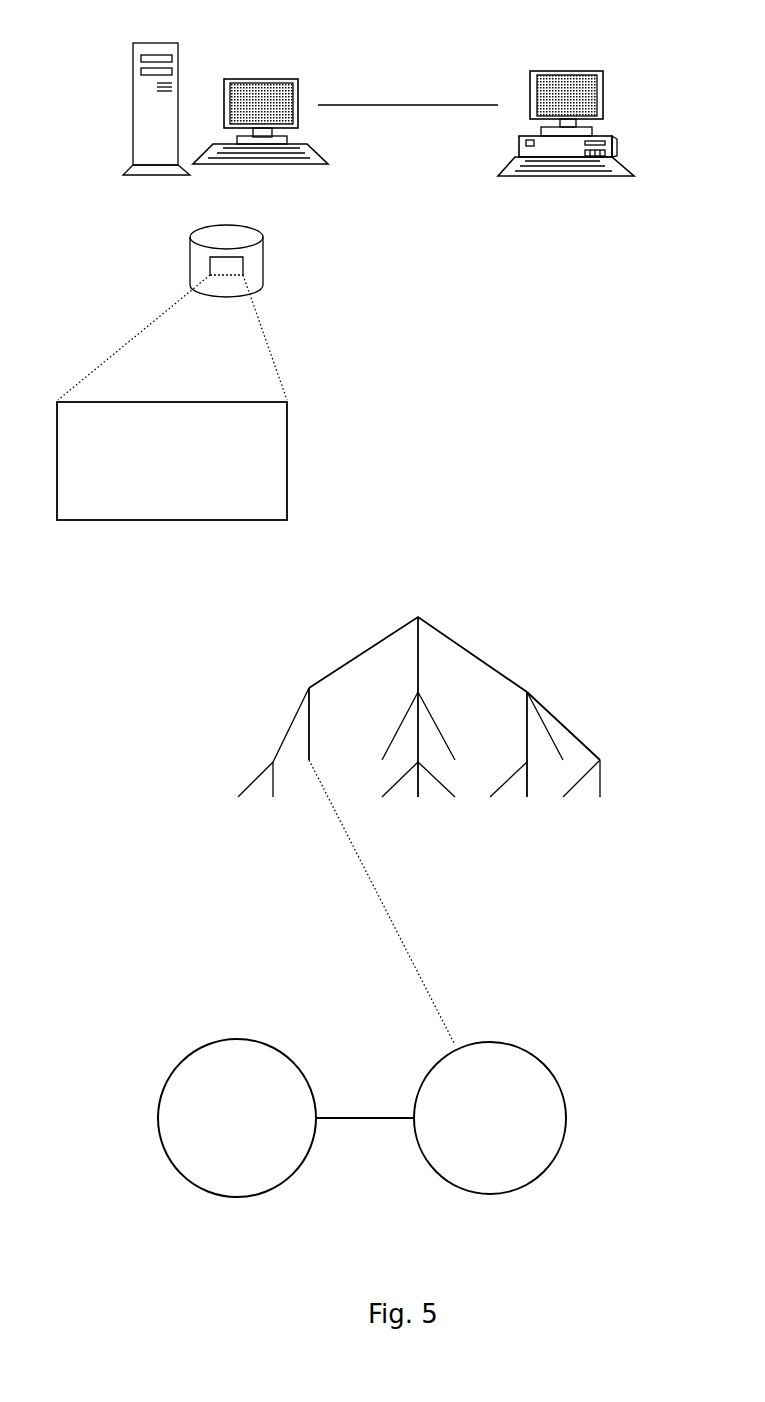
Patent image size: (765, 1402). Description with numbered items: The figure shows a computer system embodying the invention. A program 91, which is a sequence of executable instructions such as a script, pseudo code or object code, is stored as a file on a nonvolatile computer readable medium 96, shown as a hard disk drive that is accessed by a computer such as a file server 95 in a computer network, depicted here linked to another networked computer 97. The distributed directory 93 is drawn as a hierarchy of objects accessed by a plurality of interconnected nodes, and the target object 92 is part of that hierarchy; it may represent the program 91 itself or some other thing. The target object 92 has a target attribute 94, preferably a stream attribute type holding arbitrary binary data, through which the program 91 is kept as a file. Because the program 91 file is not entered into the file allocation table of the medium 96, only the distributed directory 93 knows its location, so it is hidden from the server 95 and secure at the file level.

The program 91 is at (287, 443).
The target object 92 is at (535, 1052).
The distributed directory 93 is at (478, 657).
The target attribute 94 is at (205, 1042).
The file server 95 is at (303, 50).
The nonvolatile computer readable medium 96 is at (263, 263).
The remote computer 97 is at (597, 44).